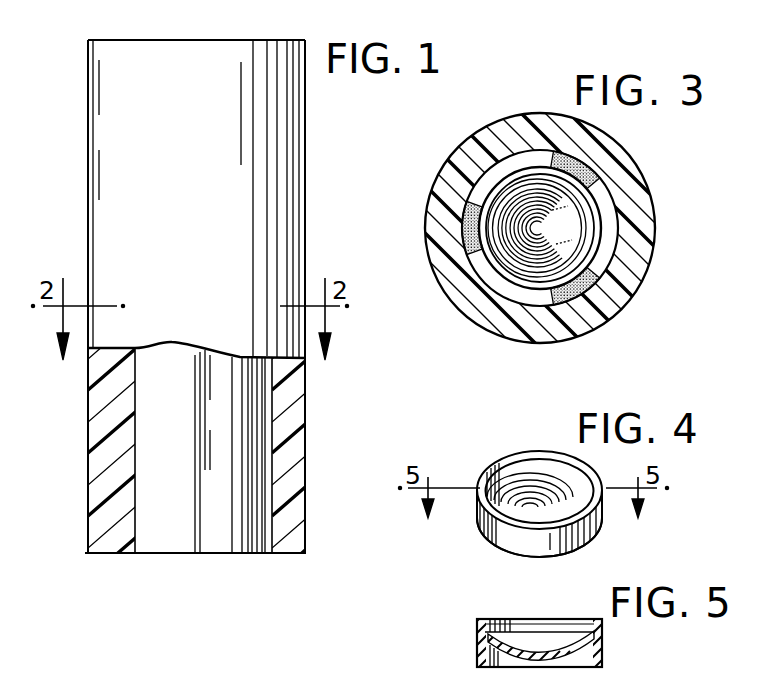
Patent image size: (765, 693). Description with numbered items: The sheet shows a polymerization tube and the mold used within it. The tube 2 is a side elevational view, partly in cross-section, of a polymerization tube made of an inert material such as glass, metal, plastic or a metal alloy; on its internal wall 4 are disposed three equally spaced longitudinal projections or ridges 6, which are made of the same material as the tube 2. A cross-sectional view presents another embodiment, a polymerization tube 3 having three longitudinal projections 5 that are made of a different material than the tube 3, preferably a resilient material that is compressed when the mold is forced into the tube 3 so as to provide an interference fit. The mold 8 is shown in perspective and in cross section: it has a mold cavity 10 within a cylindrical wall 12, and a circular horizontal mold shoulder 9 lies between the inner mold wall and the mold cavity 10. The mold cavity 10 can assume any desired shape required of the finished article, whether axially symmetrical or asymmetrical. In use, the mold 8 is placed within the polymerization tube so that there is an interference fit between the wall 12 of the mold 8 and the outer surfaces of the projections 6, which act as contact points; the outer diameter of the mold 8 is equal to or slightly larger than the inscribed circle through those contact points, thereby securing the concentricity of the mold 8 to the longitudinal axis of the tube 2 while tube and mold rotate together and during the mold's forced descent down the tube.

In FIG. 1, the tube 2 is at (83, 40).
In FIG. 3, the polymerization tube 3 is at (627, 168).
In FIG. 1, the internal wall 4 is at (180, 535).
In FIG. 3, the longitudinal projections 5 is at (627, 307).
In FIG. 1, the longitudinal projections or ridges 6 is at (137, 527).
In FIG. 3, the mold 8 is at (602, 229).
In FIG. 4, the mold 8 is at (484, 453).
In FIG. 5, the mold 8 is at (476, 613).
In FIG. 4, the mold shoulder 9 is at (553, 476).
In FIG. 4, the mold cavity 10 is at (537, 493).
In FIG. 5, the mold cavity 10 is at (537, 652).
In FIG. 4, the cylindrical wall 12 is at (480, 517).
In FIG. 5, the cylindrical wall 12 is at (600, 652).